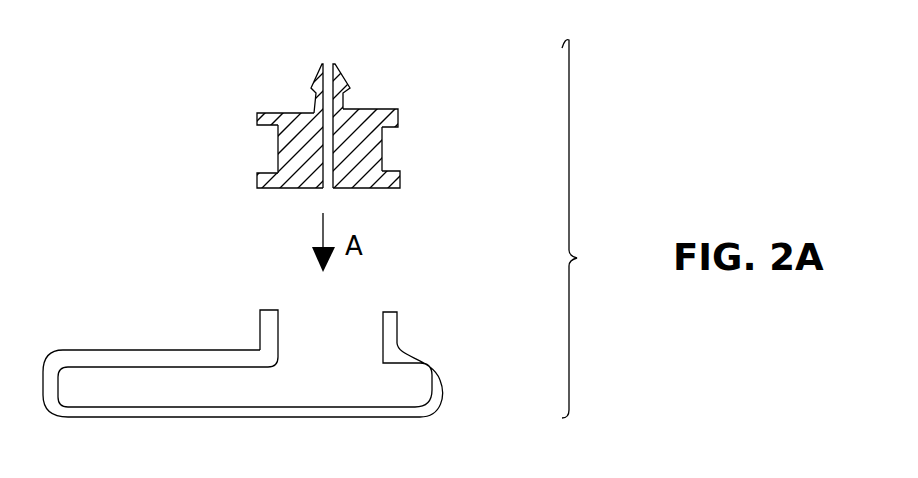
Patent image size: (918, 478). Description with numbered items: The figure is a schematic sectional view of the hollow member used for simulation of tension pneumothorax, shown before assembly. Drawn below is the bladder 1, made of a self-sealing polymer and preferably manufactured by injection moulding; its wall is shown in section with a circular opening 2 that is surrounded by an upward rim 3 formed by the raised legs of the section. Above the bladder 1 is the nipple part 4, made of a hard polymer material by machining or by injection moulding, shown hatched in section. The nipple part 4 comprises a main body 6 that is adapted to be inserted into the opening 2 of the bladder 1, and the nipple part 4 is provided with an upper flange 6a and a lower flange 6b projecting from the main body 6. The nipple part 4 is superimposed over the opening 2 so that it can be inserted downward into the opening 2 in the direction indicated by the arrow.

The bladder 1 is at (142, 337).
The circular opening 2 is at (330, 337).
The upward rim 3 is at (257, 318).
The nipple part 4 is at (405, 76).
The main body 6 is at (385, 146).
The upper flange 6a is at (258, 113).
The lower flange 6b is at (256, 187).